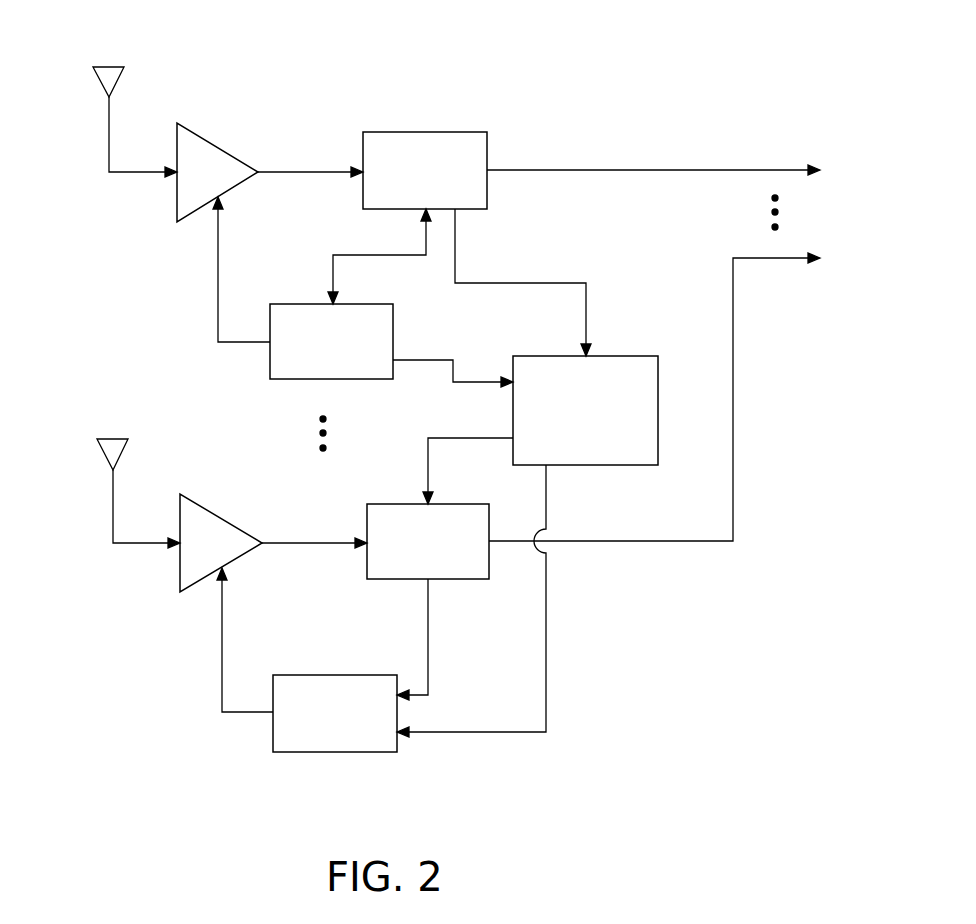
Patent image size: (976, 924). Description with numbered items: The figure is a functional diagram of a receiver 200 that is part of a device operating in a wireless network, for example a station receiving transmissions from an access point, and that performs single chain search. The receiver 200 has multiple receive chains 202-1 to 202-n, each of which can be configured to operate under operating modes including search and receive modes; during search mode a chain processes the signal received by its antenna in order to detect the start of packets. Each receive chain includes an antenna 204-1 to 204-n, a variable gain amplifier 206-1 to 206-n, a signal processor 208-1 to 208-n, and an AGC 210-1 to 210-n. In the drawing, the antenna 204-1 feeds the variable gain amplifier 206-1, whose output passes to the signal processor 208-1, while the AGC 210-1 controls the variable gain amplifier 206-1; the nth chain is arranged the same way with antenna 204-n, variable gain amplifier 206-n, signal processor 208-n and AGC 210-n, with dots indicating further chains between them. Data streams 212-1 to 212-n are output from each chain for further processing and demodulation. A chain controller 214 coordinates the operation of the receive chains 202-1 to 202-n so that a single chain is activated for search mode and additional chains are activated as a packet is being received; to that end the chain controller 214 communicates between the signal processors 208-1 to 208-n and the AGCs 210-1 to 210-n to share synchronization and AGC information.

The receiver 200 is at (308, 41).
The receive chain 202-1 is at (175, 297).
The receive chain 202-n is at (166, 655).
The antenna 204-1 is at (107, 65).
The antenna 204-n is at (108, 438).
The variable gain amplifier 206-1 is at (233, 183).
The variable gain amplifier 206-n is at (240, 553).
The signal processor 208-1 is at (439, 170).
The signal processor 208-n is at (455, 548).
The AGC 210-1 is at (348, 351).
The AGC 210-n is at (361, 721).
The data stream 212-1 is at (807, 166).
The data stream 212-n is at (807, 255).
The chain controller 214 is at (588, 413).